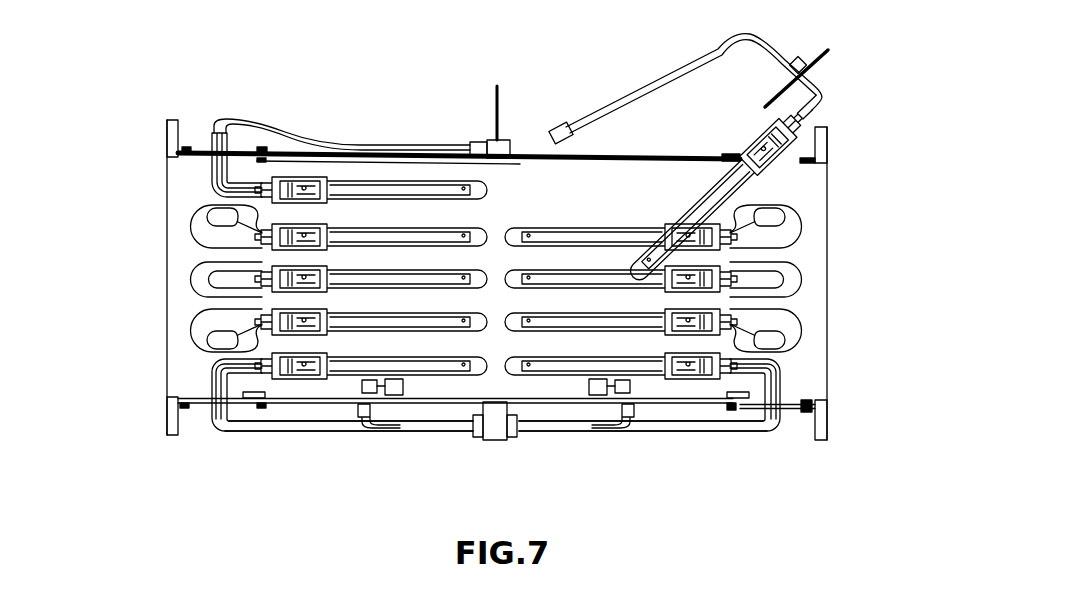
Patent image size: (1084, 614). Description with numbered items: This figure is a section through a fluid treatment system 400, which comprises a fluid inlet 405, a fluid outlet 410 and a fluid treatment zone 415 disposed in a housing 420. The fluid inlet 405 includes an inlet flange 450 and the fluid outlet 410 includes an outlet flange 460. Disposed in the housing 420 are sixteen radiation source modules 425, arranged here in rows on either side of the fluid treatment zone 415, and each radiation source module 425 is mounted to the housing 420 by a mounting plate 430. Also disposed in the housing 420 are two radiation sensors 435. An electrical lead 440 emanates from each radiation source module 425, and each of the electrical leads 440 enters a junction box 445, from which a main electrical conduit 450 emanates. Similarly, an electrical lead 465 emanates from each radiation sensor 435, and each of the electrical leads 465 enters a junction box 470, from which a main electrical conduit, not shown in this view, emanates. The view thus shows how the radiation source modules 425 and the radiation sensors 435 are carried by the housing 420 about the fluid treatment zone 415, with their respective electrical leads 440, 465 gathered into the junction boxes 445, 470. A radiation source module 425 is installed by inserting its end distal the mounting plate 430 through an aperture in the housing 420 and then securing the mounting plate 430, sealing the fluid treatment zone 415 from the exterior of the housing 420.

The fluid treatment system 400 is at (712, 475).
The fluid inlet 405 is at (165, 222).
The fluid outlet 410 is at (828, 228).
The fluid treatment zone 415 is at (566, 204).
The housing 420 is at (303, 398).
The radiation source module 425 is at (228, 403).
The mounting plate 430 is at (195, 130).
The radiation sensor 435 is at (395, 388).
The electrical lead 440 is at (380, 143).
The junction box 445 is at (507, 137).
The main electrical conduit 450 is at (493, 97).
The outlet flange 460 is at (827, 423).
The electrical lead 465 is at (448, 420).
The junction box 470 is at (494, 440).